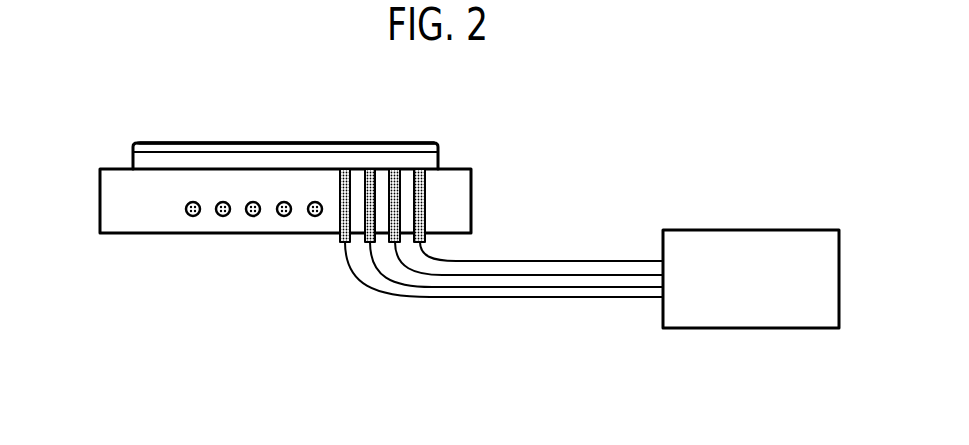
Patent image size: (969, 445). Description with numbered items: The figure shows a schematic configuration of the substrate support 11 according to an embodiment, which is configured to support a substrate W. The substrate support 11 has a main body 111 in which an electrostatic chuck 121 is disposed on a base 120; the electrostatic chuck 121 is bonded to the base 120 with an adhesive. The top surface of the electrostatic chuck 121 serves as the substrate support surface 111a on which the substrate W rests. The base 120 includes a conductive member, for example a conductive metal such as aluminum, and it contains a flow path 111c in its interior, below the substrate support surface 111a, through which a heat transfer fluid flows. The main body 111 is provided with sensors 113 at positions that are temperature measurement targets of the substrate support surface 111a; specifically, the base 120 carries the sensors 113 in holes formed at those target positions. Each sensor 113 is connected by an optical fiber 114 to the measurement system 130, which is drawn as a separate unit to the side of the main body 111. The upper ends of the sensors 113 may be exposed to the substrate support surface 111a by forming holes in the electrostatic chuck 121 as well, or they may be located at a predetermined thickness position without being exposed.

The substrate support 11 is at (479, 112).
The main body 111 is at (93, 200).
The substrate support surface 111a is at (340, 152).
The flow path 111c is at (194, 217).
The substrate W is at (250, 143).
The electrostatic chuck 121 is at (433, 161).
The base 120 is at (457, 203).
The sensors 113 is at (343, 220).
The optical fiber 114 is at (418, 297).
The measurement system 130 is at (748, 230).